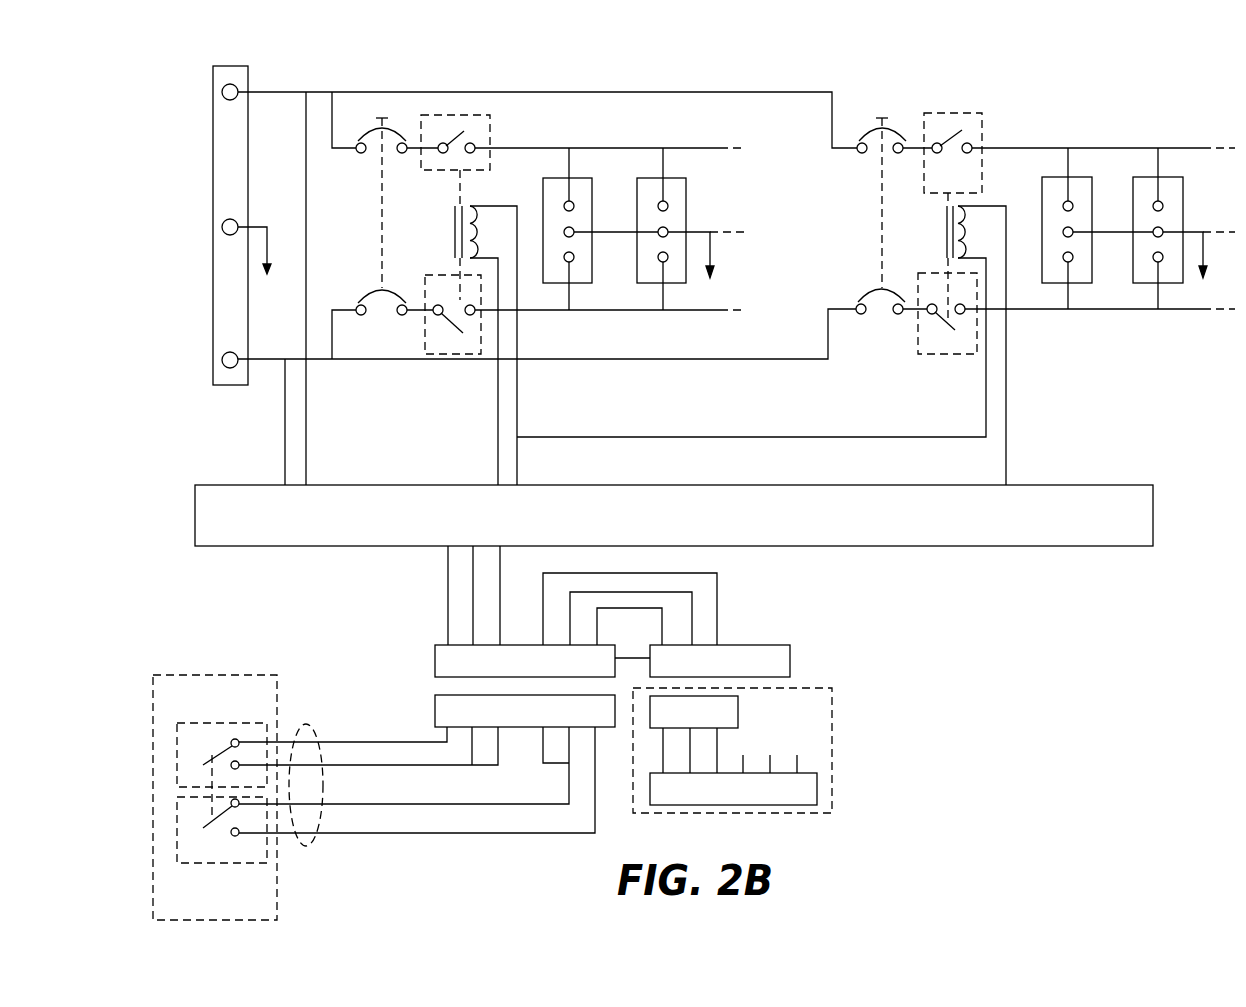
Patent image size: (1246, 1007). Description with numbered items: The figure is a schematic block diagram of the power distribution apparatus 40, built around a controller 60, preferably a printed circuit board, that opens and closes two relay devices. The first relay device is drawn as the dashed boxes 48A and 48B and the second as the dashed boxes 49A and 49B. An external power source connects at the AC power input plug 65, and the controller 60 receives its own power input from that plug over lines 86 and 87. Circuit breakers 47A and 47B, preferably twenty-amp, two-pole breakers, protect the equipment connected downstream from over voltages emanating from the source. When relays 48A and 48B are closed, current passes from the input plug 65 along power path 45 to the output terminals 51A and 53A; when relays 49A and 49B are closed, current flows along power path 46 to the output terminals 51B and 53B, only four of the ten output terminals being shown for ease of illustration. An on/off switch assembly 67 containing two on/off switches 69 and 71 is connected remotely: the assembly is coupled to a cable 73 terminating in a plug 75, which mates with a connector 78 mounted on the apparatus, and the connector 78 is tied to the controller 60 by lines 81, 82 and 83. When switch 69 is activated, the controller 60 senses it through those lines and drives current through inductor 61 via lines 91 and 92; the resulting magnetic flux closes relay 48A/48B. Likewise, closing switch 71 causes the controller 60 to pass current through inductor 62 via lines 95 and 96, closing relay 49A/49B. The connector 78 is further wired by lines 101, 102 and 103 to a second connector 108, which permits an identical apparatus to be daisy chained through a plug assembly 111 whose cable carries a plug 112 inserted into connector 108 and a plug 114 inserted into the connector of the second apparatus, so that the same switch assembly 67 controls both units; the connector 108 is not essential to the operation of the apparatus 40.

The power distribution apparatus 40 is at (1098, 78).
The power path 45 is at (698, 148).
The power path 46 is at (1182, 148).
The circuit breaker 47A is at (395, 132).
The circuit breaker 47B is at (872, 133).
The relay 48A is at (610, 92).
The relay 48B is at (425, 349).
The relay 49A is at (958, 113).
The relay 49B is at (918, 344).
The output terminal 51A is at (578, 283).
The output terminal 51B is at (1083, 283).
The output terminal 53A is at (678, 283).
The output terminal 53B is at (1173, 283).
The controller 60 is at (1153, 497).
The inductor 61 is at (477, 205).
The inductor 62 is at (985, 205).
The AC power input plug 65 is at (213, 382).
The on/off switch assembly 67 is at (178, 675).
The on/off switch 69 is at (193, 723).
The on/off switch 71 is at (193, 863).
The cable 73 is at (305, 712).
The plug 75 is at (435, 711).
The connector 78 is at (435, 658).
The line 81 is at (448, 563).
The line 82 is at (473, 592).
The line 83 is at (500, 578).
The line 86 is at (285, 422).
The line 87 is at (306, 405).
The line 91 is at (498, 405).
The line 92 is at (517, 393).
The line 95 is at (986, 393).
The line 96 is at (1006, 383).
The line 101 is at (688, 574).
The line 102 is at (693, 595).
The line 103 is at (665, 610).
The second connector 108 is at (790, 655).
The plug assembly 111 is at (832, 707).
The plug 112 is at (745, 695).
The plug 114 is at (817, 778).